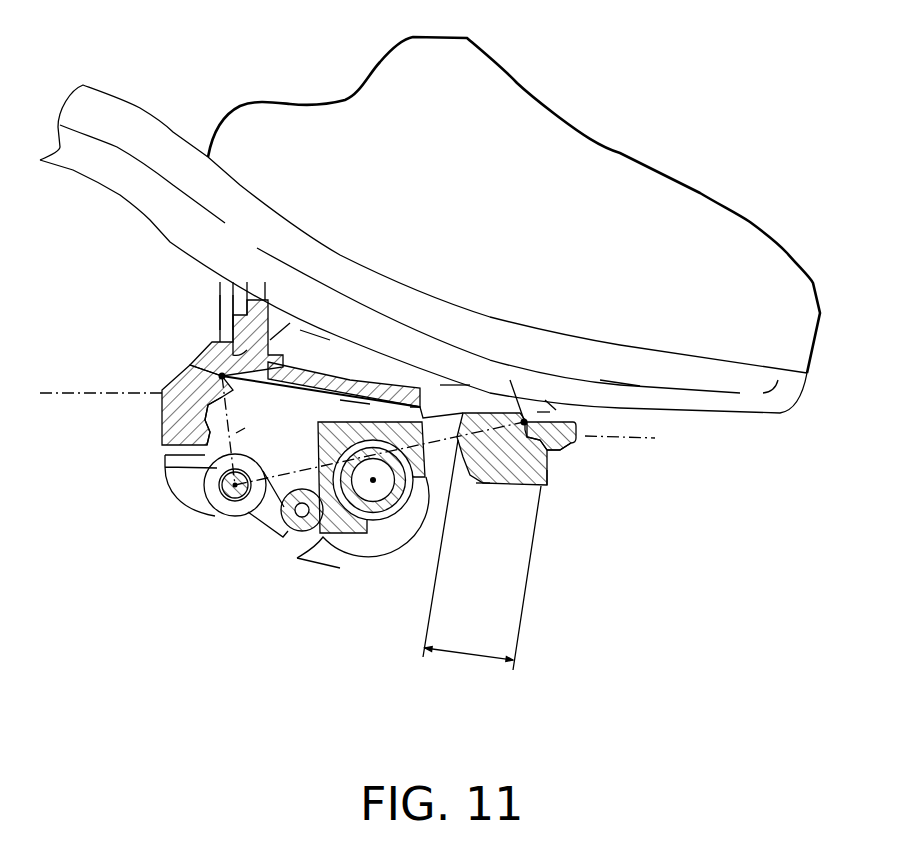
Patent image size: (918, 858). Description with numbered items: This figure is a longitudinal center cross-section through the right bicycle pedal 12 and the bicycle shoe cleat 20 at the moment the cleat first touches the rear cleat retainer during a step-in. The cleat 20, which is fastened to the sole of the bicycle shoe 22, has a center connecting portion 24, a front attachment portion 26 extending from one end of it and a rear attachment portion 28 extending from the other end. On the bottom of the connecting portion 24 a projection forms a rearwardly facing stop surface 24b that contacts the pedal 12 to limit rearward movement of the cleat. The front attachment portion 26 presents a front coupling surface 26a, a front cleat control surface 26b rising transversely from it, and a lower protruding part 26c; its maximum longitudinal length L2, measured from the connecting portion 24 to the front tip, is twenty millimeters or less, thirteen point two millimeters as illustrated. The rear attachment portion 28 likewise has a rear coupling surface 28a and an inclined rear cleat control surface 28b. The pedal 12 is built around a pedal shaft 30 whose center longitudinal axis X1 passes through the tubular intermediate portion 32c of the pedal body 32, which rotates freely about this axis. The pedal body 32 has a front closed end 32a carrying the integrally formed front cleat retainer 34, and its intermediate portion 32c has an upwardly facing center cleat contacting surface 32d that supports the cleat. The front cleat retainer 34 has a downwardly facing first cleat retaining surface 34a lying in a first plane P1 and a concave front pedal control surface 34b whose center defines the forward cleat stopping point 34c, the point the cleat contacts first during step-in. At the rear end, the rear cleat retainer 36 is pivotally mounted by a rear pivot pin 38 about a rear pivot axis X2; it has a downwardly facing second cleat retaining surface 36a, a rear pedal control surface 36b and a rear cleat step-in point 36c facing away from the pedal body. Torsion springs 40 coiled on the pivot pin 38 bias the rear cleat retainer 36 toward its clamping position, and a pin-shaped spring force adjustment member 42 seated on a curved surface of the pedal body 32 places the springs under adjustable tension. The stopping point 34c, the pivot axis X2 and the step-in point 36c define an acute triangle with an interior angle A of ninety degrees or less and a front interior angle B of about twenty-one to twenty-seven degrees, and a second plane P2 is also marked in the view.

The bicycle pedal 12 is at (340, 570).
The bicycle shoe cleat 20 is at (470, 340).
The bicycle shoe 22 is at (640, 163).
The center connecting portion 24 is at (340, 360).
The stop surface 24b is at (457, 375).
The front attachment portion 26 is at (548, 500).
The front coupling surface 26a is at (620, 378).
The front cleat control surface 26b is at (543, 408).
The lower protruding part 26c is at (547, 486).
The rear attachment portion 28 is at (207, 352).
The rear coupling surface 28a is at (233, 353).
The rear cleat control surface 28b is at (210, 318).
The pedal shaft 30 is at (362, 554).
The pedal body 32 is at (458, 484).
The first closed end 32a is at (575, 444).
The intermediate portion 32c is at (415, 407).
The center cleat contacting surface 32d is at (357, 400).
The front cleat retainer 34 is at (582, 433).
The first cleat retaining surface 34a is at (547, 452).
The front pedal control surface 34b is at (524, 420).
The forward cleat stopping point 34c is at (550, 410).
The rear cleat retainer 36 is at (157, 412).
The second cleat retaining surface 36a is at (220, 418).
The rear pedal control surface 36b is at (323, 370).
The rear cleat step-in point 36c is at (270, 340).
The rear pivot pin 38 is at (220, 513).
The rear torsion springs 40 is at (200, 480).
The spring force adjustment member 42 is at (312, 532).
The interior angle A is at (238, 432).
The front interior angle B is at (483, 485).
The center longitudinal axis X1 is at (374, 484).
The rear pivot axis X2 is at (235, 490).
The first plane P1 is at (655, 438).
The second plane P2 is at (73, 393).
The maximum overall longitudinal length of the front attachment portion L2 is at (482, 565).